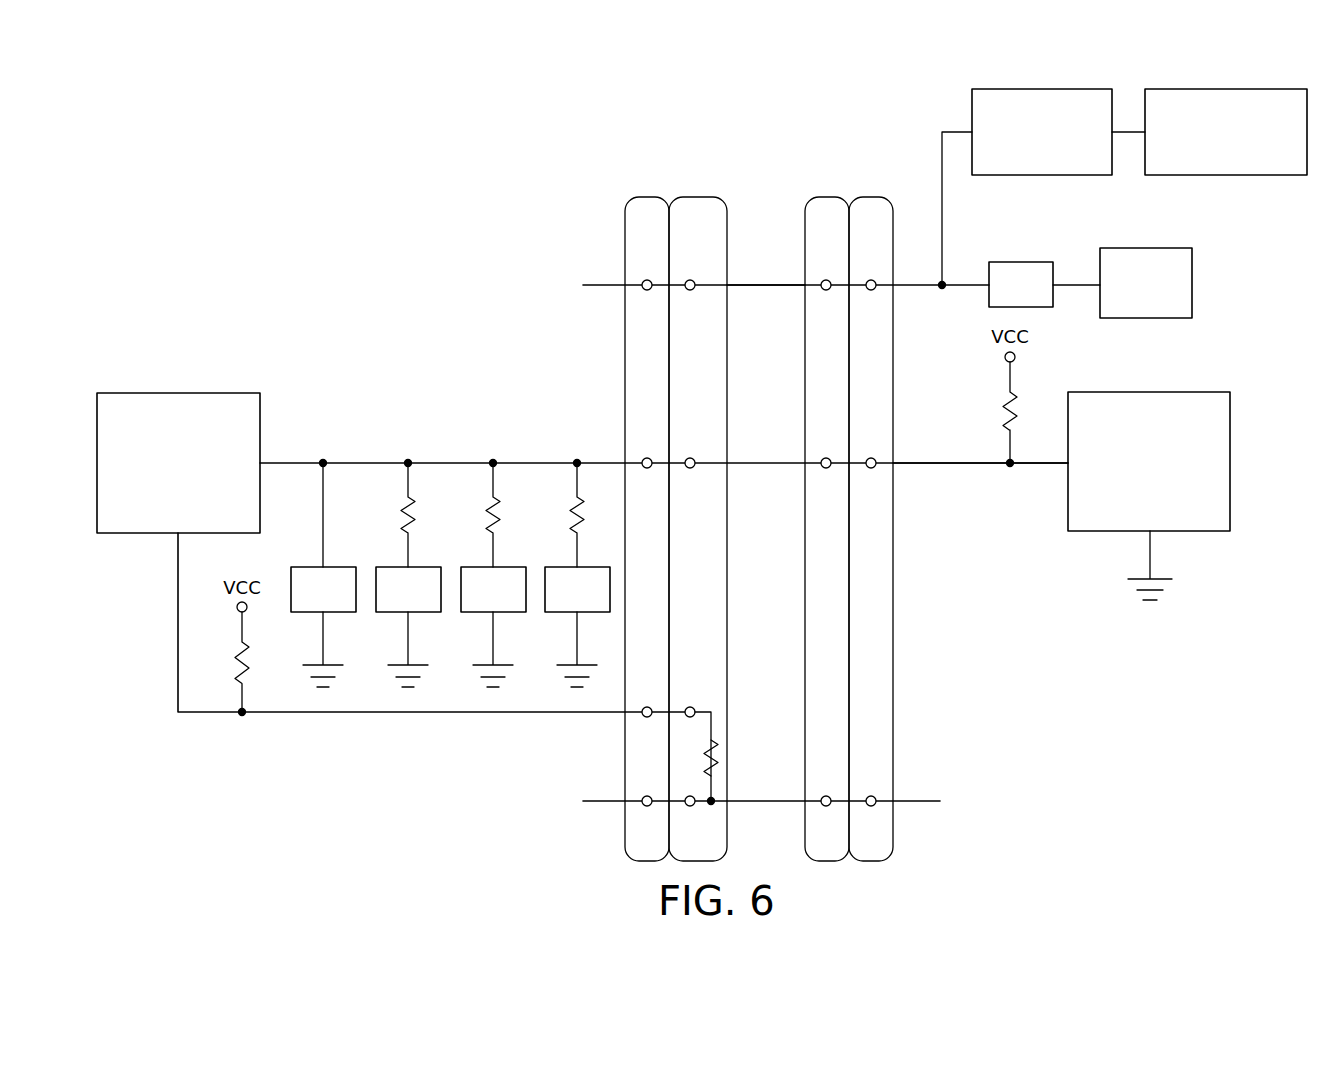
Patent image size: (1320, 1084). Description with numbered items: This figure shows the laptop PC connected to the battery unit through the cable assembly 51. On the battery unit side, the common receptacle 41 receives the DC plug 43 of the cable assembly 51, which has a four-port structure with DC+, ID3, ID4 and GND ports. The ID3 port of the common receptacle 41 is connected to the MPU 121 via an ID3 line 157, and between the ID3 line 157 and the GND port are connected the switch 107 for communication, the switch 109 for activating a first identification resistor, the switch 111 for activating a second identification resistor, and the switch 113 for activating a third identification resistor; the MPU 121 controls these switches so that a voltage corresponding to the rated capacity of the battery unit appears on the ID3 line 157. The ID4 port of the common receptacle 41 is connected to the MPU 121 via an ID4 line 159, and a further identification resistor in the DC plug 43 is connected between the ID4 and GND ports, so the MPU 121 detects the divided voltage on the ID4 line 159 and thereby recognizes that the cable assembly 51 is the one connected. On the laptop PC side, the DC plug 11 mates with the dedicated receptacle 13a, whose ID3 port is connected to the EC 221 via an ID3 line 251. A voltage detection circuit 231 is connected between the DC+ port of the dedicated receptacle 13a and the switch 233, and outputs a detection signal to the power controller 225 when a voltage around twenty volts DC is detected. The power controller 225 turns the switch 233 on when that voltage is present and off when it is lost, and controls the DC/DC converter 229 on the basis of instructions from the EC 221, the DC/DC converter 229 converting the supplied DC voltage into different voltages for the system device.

The DC plug 11 is at (827, 197).
The dedicated receptacle 13a is at (872, 197).
The common receptacle 41 is at (648, 197).
The DC plug 43 is at (698, 197).
The cable assembly 51 is at (773, 262).
The switch for communication 107 is at (337, 567).
The switch for activating identification resistor R1 109 is at (425, 567).
The switch for activating identification resistor R2 111 is at (509, 567).
The switch for activating identification resistor R3 113 is at (592, 567).
The MPU 121 is at (275, 382).
The ID3 line 157 is at (444, 463).
The ID4 line 159 is at (450, 712).
The EC 221 is at (1208, 377).
The power controller 225 is at (1268, 175).
The DC/DC converter 229 is at (1164, 235).
The voltage detection circuit 231 is at (1077, 175).
The switch 233 is at (1030, 262).
The ID3 line 251 is at (930, 449).